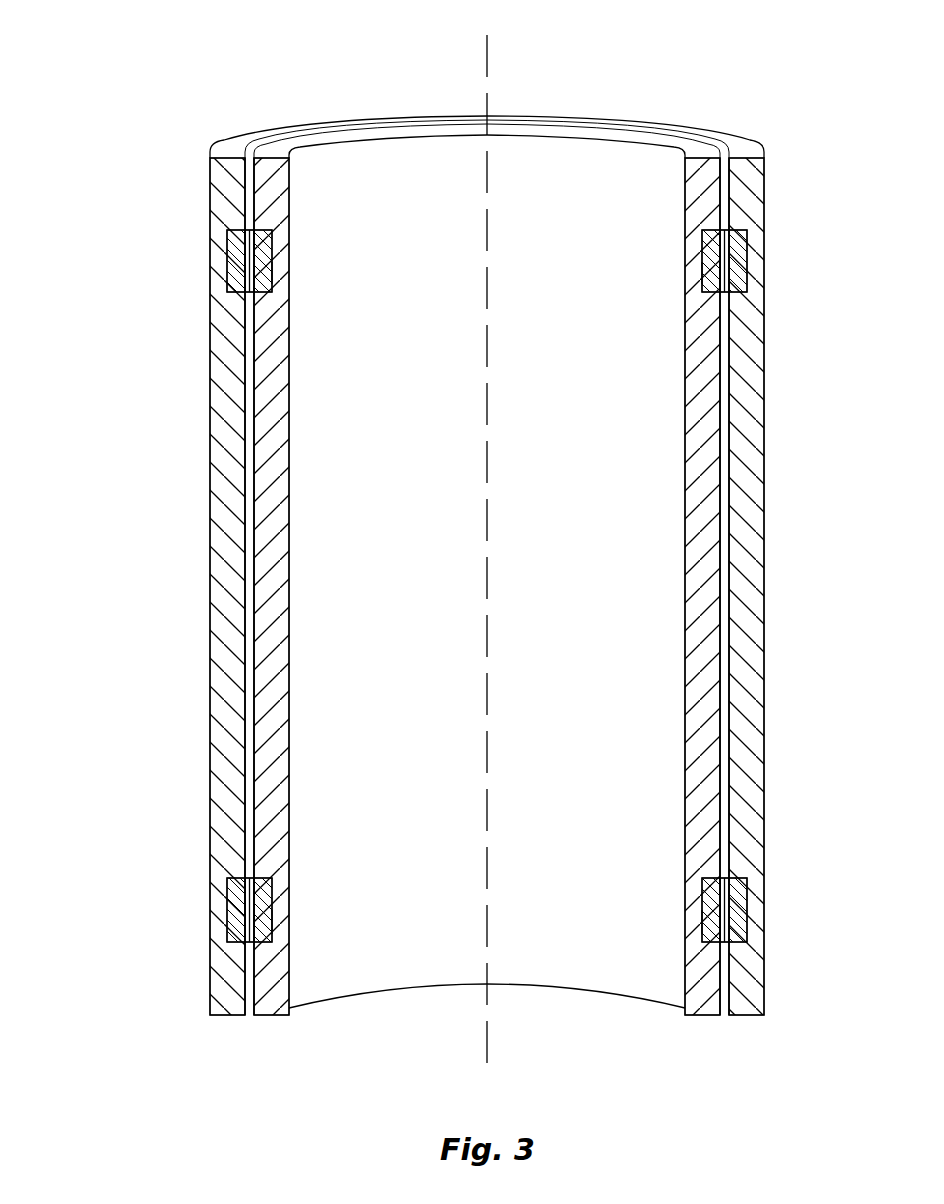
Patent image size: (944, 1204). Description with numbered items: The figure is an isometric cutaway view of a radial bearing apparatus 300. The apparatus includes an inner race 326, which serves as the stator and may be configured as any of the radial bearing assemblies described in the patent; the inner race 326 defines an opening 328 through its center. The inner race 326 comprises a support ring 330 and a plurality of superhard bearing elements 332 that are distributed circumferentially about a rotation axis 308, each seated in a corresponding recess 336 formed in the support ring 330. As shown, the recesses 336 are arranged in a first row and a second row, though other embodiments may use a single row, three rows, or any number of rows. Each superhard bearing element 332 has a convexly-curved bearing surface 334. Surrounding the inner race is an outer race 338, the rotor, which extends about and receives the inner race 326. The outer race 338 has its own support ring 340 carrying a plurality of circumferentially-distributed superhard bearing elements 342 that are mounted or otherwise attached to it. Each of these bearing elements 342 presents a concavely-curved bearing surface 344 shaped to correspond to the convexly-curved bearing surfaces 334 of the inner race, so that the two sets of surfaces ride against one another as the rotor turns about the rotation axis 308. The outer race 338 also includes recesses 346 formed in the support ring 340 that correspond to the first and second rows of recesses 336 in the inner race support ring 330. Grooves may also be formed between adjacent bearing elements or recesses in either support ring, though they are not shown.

The radial bearing apparatus 300 is at (102, 232).
The rotation axis 308 is at (487, 52).
The inner race 326 is at (378, 124).
The opening 328 is at (580, 175).
The support ring 330 is at (265, 162).
The superhard bearing elements 332 is at (262, 294).
The convexly-curved bearing surface 334 is at (251, 297).
The recesses 336 is at (272, 273).
The outer race 338 is at (229, 153).
The support ring 340 is at (210, 158).
The superhard bearing elements 342 is at (239, 241).
The concavely-curved bearing surface 344 is at (247, 264).
The recesses 346 is at (227, 262).